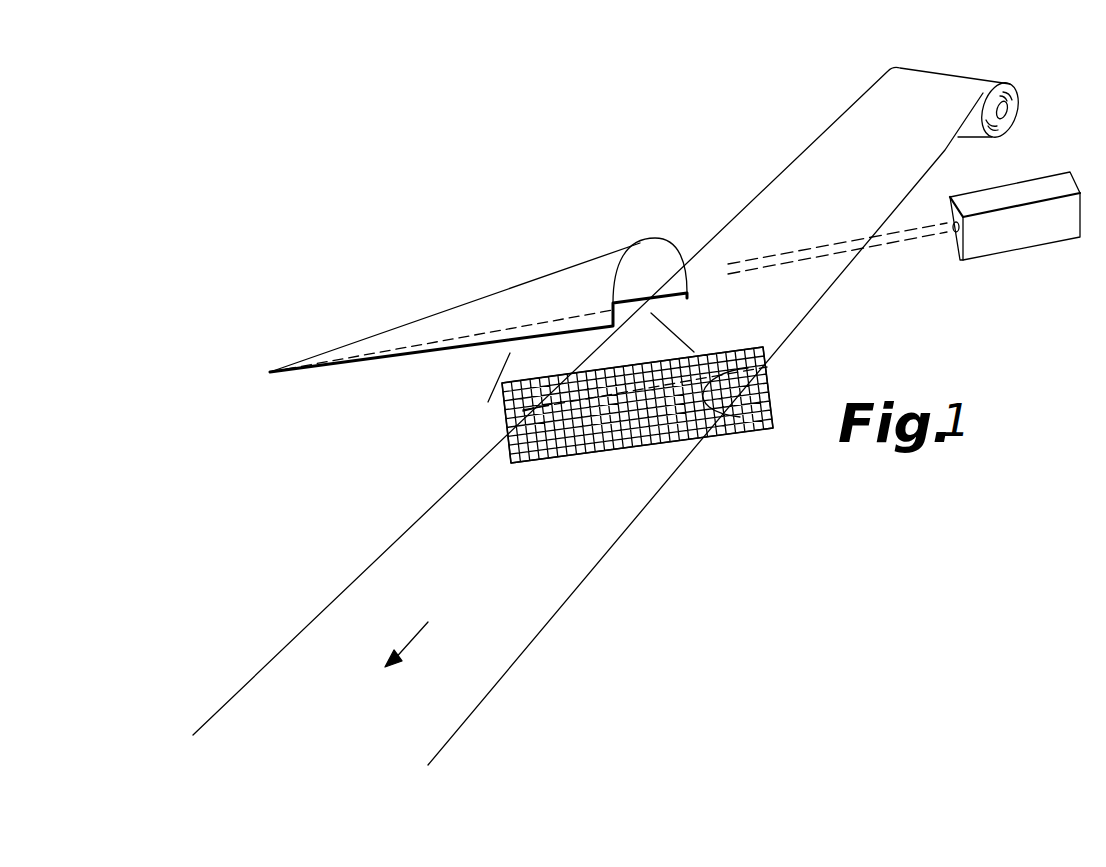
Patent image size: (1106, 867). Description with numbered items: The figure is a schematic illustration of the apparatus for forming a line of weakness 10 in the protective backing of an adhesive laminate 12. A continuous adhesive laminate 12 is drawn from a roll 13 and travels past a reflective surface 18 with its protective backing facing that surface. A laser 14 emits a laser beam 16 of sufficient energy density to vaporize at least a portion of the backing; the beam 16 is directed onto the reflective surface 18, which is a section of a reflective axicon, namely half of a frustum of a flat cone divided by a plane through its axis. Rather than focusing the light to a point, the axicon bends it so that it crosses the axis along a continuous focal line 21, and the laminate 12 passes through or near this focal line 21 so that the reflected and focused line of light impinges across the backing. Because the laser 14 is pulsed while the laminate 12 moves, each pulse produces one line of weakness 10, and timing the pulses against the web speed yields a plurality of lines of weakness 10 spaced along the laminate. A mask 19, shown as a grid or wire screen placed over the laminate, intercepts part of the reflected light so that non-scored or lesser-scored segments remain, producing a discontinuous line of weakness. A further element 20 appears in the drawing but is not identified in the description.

The line of weakness 10 is at (760, 417).
The adhesive laminate 12 is at (803, 153).
The roll 13 is at (1011, 84).
The laser 14 is at (1005, 192).
The laser beam 16 is at (827, 263).
The reflective surface 18 is at (437, 312).
The mask 19 is at (767, 367).
The slit line 20 is at (492, 380).
The focal line 21 is at (523, 411).